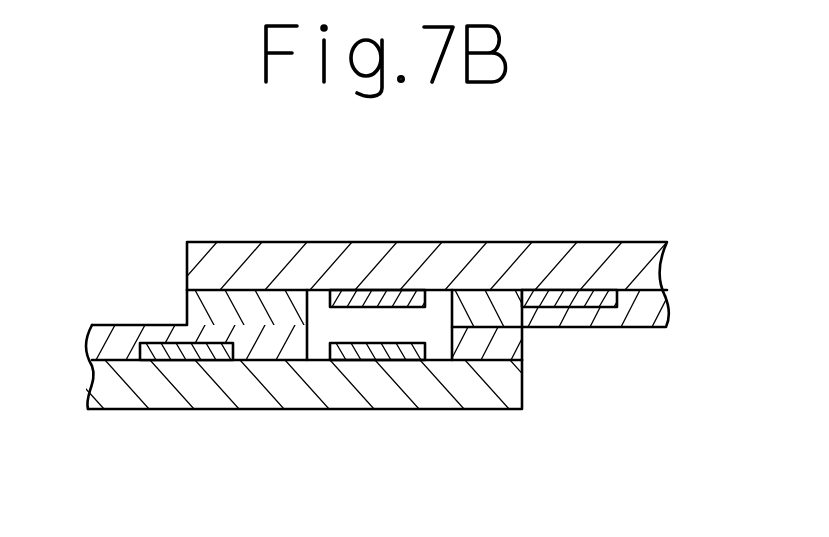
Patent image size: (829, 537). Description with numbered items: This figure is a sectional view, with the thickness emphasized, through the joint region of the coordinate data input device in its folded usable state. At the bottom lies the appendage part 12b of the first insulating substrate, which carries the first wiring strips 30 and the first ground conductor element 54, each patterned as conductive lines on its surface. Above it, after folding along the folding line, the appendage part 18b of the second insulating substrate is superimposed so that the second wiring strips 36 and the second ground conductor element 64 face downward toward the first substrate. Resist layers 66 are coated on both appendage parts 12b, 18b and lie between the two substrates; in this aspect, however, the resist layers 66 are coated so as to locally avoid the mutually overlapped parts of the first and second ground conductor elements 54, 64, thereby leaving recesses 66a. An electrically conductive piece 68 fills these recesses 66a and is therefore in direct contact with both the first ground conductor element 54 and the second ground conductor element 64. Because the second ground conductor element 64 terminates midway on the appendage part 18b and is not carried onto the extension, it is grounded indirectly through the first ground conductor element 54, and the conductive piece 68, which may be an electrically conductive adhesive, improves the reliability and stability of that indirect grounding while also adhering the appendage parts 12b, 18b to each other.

The appendage part 12b is at (167, 409).
The appendage part 18b is at (497, 240).
The first wiring strips 30 is at (212, 352).
The second wiring strips 36 is at (587, 297).
The first ground conductor element 54 is at (358, 355).
The second ground conductor element 64 is at (372, 297).
The resist layers 66 is at (200, 300).
The recesses 66a is at (313, 292).
The electrically conductive piece 68 is at (433, 323).